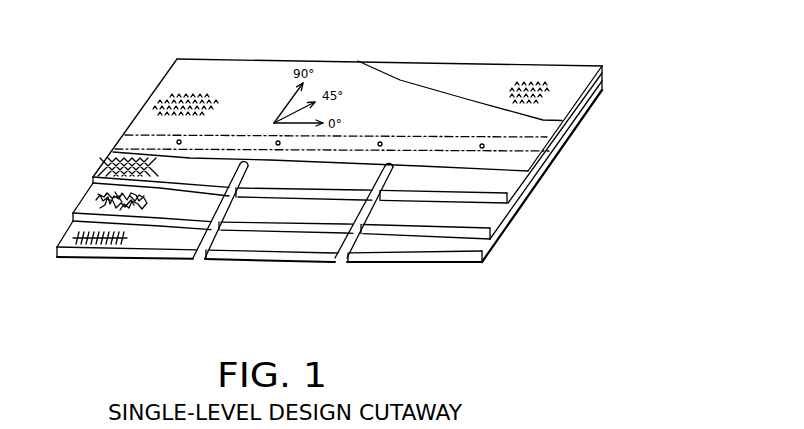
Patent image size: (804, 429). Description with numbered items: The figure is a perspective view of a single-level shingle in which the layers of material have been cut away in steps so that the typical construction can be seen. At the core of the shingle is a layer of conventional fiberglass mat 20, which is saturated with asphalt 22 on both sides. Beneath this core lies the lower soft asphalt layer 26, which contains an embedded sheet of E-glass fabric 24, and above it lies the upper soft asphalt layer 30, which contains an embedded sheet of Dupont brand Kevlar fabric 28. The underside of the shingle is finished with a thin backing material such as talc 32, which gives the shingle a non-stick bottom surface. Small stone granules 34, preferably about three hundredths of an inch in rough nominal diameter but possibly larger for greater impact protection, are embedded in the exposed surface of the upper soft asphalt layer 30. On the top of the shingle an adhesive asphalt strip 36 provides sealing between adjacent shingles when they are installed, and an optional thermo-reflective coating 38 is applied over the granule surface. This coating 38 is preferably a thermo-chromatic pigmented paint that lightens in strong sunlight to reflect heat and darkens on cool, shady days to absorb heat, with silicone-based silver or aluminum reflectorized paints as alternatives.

The fiberglass mat 20 is at (309, 274).
The asphalt 22 is at (448, 234).
The E-glass fabric 24 is at (269, 295).
The lower soft asphalt layer 26 is at (390, 258).
The Kevlar fabric 28 is at (547, 174).
The upper soft asphalt layer 30 is at (512, 224).
The talc backing material 32 is at (552, 168).
The stone granules 34 is at (222, 77).
The adhesive asphalt strip 36 is at (143, 143).
The thermo-reflective coating 38 is at (477, 78).